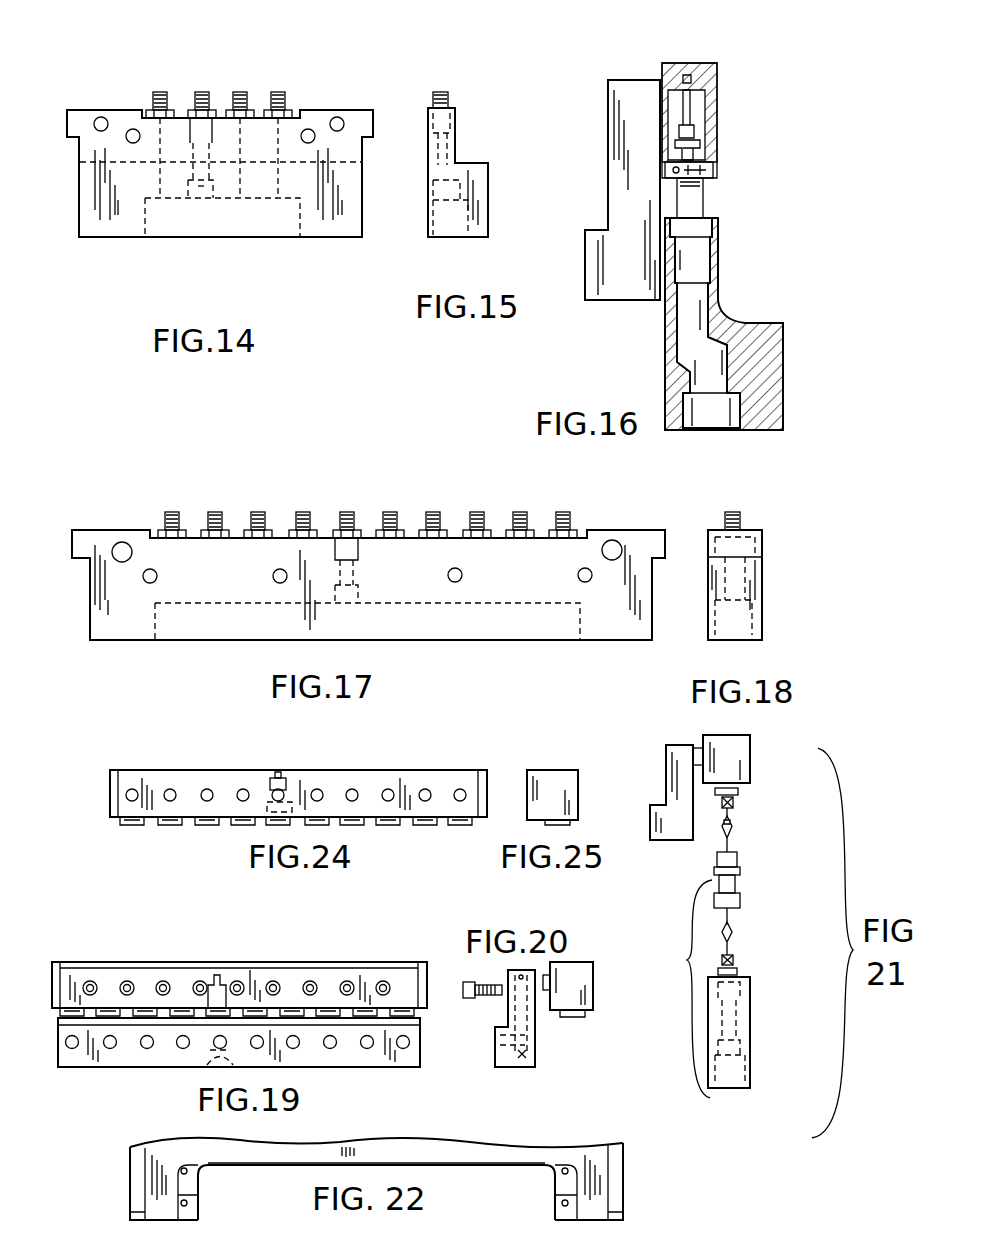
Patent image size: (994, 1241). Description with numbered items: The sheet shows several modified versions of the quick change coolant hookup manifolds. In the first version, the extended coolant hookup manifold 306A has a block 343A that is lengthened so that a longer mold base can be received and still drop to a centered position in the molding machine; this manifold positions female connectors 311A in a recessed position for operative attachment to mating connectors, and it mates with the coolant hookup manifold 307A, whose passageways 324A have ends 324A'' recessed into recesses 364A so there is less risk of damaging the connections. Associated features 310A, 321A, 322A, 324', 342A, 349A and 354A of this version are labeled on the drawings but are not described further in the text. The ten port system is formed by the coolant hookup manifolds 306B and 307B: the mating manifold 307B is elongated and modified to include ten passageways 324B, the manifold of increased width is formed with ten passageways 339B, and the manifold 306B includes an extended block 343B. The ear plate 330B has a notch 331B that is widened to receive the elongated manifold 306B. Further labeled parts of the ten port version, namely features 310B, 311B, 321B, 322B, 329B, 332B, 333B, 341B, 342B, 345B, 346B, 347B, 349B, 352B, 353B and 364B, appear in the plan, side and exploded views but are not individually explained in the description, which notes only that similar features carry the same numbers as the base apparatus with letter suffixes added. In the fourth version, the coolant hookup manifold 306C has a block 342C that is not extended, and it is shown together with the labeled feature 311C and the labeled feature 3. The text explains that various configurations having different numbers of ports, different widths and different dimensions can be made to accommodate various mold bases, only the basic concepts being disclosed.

In FIG. 24, the connector housing 3 is at (243, 789).
In FIG. 16, the coolant hookup manifold 306A is at (737, 121).
In FIG. 20, the coolant hookup manifold 306B is at (588, 950).
In FIG. 19, the coolant hookup manifold 306B is at (366, 955).
In FIG. 24, the coolant hookup manifold 306C is at (378, 760).
In FIG. 25, the coolant hookup manifold 306C is at (560, 760).
In FIG. 14, the coolant hookup manifold 307A is at (317, 88).
In FIG. 15, the coolant hookup manifold 307A is at (498, 45).
In FIG. 16, the coolant hookup manifold 307A is at (742, 268).
In FIG. 17, the coolant hookup manifold 307B is at (274, 490).
In FIG. 18, the coolant hookup manifold 307B is at (709, 505).
In FIG. 21, the coolant hookup manifold 307B is at (669, 989).
In FIG. 14, the set screw 310A is at (195, 92).
In FIG. 15, the set screw 310A is at (445, 92).
In FIG. 16, the set screw 310A is at (703, 200).
In FIG. 17, the set screw 310B is at (349, 512).
In FIG. 18, the set screw 310B is at (740, 516).
In FIG. 16, the female connectors 311A is at (713, 170).
In FIG. 20, the connector plate 311B is at (566, 1018).
In FIG. 24, the connector plate 311C is at (282, 778).
In FIG. 14, the left end portion 321A is at (68, 124).
In FIG. 17, the left end portion 321B is at (73, 540).
In FIG. 14, the right end portion 322A is at (373, 119).
In FIG. 17, the right end portion 322B is at (664, 535).
In FIG. 14, the upper bore 324' is at (235, 111).
In FIG. 14, the passageways 324A is at (242, 225).
In FIG. 15, the passageways 324A is at (486, 139).
In FIG. 16, the passageways 324A is at (743, 283).
In FIG. 14, the ends of passageways 324A'' is at (243, 247).
In FIG. 15, the ends of passageways 324A'' is at (501, 192).
In FIG. 16, the ends of passageways 324A'' is at (649, 362).
In FIG. 17, the passageways 324B is at (356, 592).
In FIG. 18, the passageways 324B is at (733, 576).
In FIG. 21, the passageways 324B is at (730, 1022).
In FIG. 22, the end block 329B is at (150, 1222).
In FIG. 22, the ear plate 330B is at (126, 1184).
In FIG. 22, the notch 331B is at (277, 1191).
In FIG. 22, the side plate 332B is at (195, 1223).
In FIG. 22, the side plate 333B is at (553, 1223).
In FIG. 20, the passageways 339B is at (518, 1012).
In FIG. 19, the passageways 339B is at (212, 1034).
In FIG. 20, the notch 341B is at (498, 1043).
In FIG. 16, the contact block 342A is at (717, 78).
In FIG. 21, the contact block 342B is at (736, 736).
In FIG. 20, the contact block 342B is at (604, 1016).
In FIG. 25, the block 342C is at (538, 770).
In FIG. 16, the block 343A is at (607, 108).
In FIG. 21, the extended block 343B is at (666, 800).
In FIG. 20, the extended block 343B is at (538, 1054).
In FIG. 21, the nut 345B is at (734, 803).
In FIG. 21, the spring pin 346B is at (732, 827).
In FIG. 21, the coupling sleeve 347B is at (737, 860).
In FIG. 14, the lower body portion 349A is at (336, 238).
In FIG. 15, the lower body portion 349A is at (476, 240).
In FIG. 16, the lower body portion 349A is at (770, 437).
In FIG. 18, the lower body portion 349B is at (763, 606).
In FIG. 21, the lower body portion 349B is at (752, 1088).
In FIG. 21, the spring pin 352B is at (734, 930).
In FIG. 21, the coupling sleeve 353B is at (740, 897).
In FIG. 15, the shoulder 354A is at (490, 166).
In FIG. 14, the recesses 364A is at (166, 230).
In FIG. 15, the recesses 364A is at (446, 240).
In FIG. 16, the recesses 364A is at (713, 425).
In FIG. 17, the cavity 364B is at (236, 628).
In FIG. 18, the cavity 364B is at (736, 630).